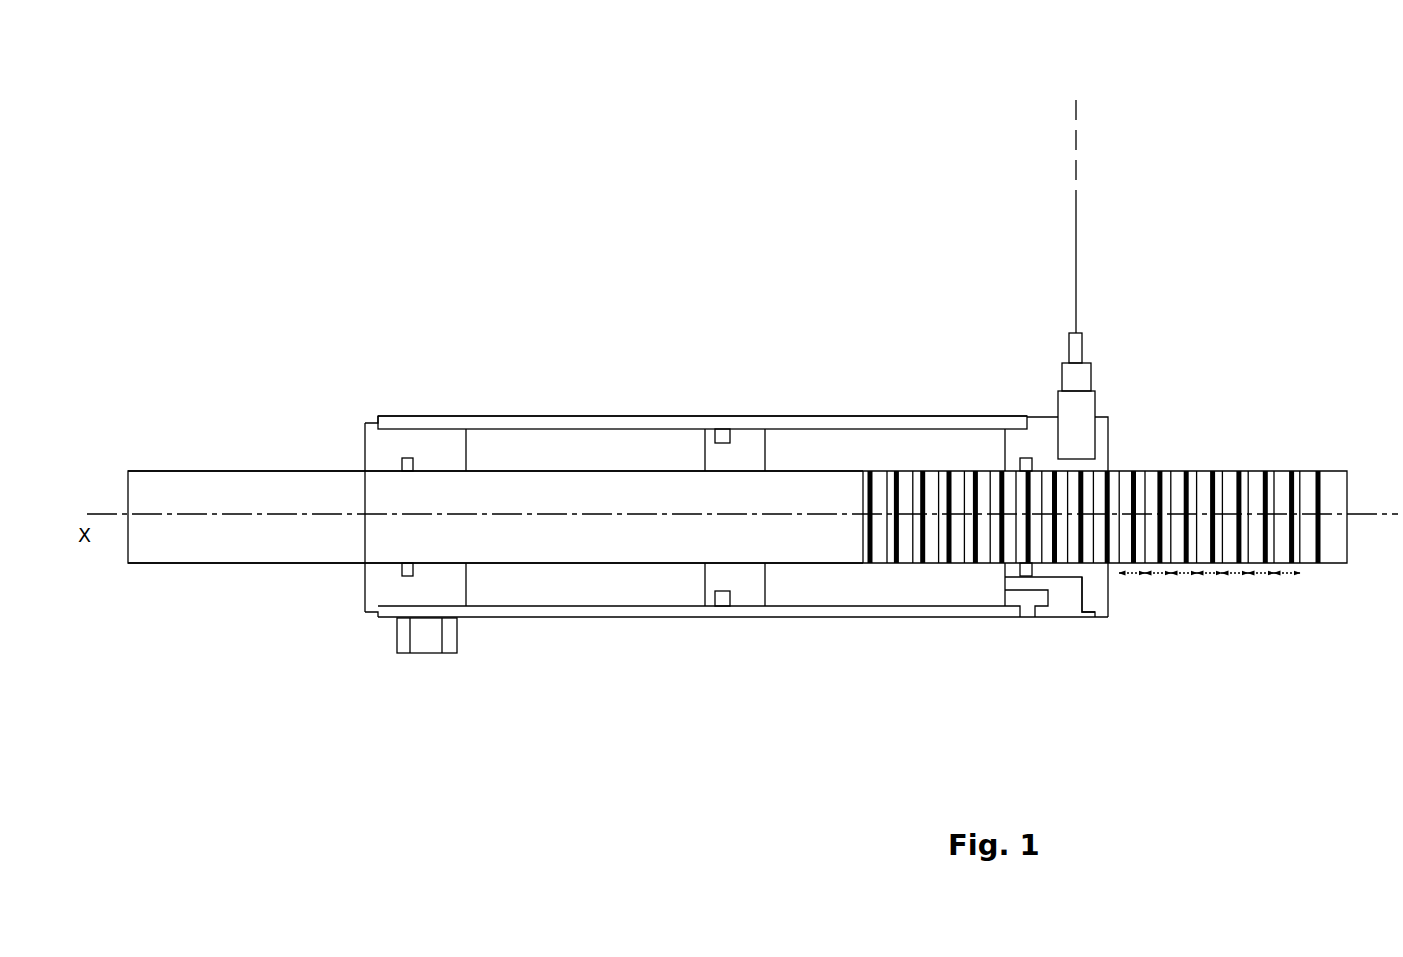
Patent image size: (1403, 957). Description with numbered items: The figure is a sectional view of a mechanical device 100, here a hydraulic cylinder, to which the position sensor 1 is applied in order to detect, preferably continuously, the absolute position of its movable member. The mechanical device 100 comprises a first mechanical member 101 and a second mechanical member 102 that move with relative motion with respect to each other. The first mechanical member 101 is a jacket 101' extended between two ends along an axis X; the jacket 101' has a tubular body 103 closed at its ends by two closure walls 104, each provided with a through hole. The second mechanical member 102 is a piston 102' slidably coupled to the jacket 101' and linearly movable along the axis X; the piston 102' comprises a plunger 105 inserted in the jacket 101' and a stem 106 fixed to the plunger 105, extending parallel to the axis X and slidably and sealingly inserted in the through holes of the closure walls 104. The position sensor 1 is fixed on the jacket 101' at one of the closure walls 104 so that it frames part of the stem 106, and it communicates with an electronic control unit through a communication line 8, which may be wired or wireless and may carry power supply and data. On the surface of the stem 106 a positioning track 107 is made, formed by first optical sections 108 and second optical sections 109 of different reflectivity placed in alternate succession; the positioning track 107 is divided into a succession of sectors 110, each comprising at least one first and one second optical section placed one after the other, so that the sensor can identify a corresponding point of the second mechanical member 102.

The mechanical device 100 is at (218, 165).
The position sensor 1 is at (1108, 372).
The communication line 8 is at (1065, 218).
The first mechanical member 101 is at (690, 342).
The jacket 101' is at (702, 343).
The second mechanical member 102 is at (742, 613).
The piston 102' is at (495, 664).
The tubular body 103 is at (665, 612).
The closure walls 104 is at (428, 587).
The plunger 105 is at (745, 587).
The stem 106 is at (262, 493).
The positioning track 107 is at (1227, 480).
The first optical sections 108 is at (1112, 480).
The second optical sections 109 is at (1152, 480).
The sectors 110 is at (1283, 580).